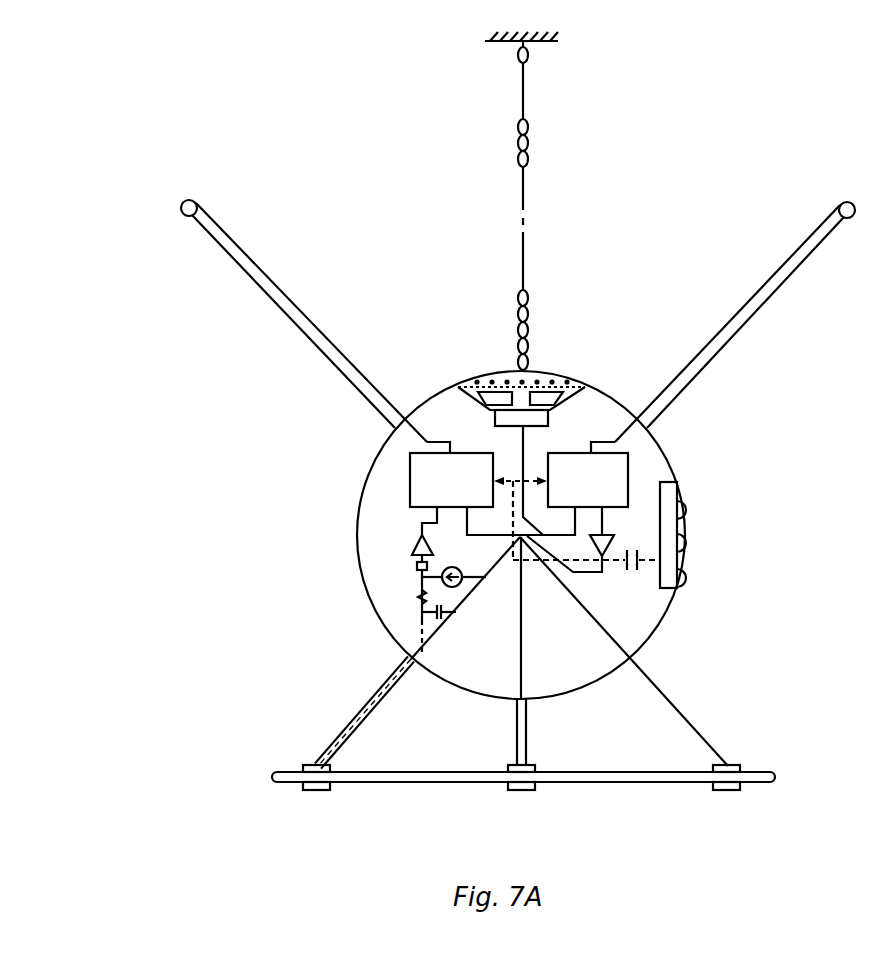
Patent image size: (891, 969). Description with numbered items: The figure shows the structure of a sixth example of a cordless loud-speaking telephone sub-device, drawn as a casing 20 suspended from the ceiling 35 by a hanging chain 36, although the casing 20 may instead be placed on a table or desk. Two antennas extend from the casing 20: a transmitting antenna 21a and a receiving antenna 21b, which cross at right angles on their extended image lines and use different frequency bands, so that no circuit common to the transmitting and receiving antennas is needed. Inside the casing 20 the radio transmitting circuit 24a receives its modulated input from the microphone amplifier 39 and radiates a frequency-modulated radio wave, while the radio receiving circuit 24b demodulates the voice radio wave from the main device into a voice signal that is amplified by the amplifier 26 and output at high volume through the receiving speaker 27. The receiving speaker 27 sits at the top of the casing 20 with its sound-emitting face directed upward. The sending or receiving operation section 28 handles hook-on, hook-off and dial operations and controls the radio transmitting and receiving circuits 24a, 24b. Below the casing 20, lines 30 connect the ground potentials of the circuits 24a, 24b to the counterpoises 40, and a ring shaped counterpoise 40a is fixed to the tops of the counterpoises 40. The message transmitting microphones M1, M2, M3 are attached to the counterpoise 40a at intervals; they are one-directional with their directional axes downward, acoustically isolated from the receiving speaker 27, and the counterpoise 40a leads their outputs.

The casing 20 is at (668, 606).
The transmitting antenna 21a is at (298, 306).
The receiving antenna 21b is at (771, 276).
The radio transmitting circuit 24a is at (410, 485).
The radio receiving circuit 24b is at (628, 470).
The amplifier 26 is at (616, 543).
The receiving speaker 27 is at (590, 396).
The sending or receiving operation section 28 is at (684, 545).
The lines 30 is at (597, 622).
The ceiling 35 is at (547, 42).
The hanging chain 36 is at (529, 298).
The microphone amplifier 39 is at (409, 548).
The counterpoises 40 is at (363, 712).
The ring shaped counterpoise 40a is at (648, 783).
The message transmitting microphone M1 is at (522, 791).
The message transmitting microphone M2 is at (314, 791).
The message transmitting microphone M3 is at (729, 791).